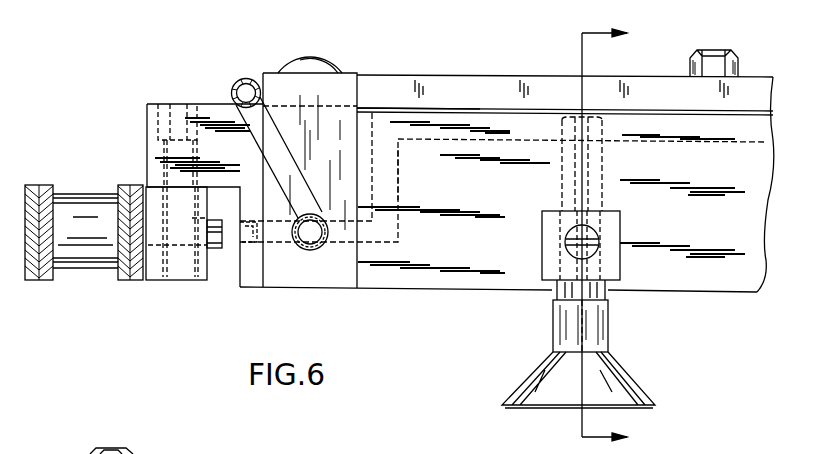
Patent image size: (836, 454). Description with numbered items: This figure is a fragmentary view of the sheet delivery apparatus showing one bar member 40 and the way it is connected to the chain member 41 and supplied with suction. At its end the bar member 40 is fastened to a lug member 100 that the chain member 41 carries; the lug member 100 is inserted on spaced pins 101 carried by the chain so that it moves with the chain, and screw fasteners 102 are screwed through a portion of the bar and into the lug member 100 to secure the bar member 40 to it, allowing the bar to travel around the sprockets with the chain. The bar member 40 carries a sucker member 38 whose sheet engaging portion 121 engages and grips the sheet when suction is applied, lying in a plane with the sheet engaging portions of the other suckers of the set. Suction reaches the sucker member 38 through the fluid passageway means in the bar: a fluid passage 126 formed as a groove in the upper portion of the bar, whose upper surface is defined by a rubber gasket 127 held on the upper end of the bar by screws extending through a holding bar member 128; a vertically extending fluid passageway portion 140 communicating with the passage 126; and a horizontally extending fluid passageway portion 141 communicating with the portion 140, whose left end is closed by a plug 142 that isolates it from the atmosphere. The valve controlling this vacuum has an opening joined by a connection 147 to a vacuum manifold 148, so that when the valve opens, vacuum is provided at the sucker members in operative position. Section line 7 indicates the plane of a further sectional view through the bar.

The section line 7- 7 is at (616, 233).
The sucker member 38 is at (603, 333).
The bar member 40 is at (457, 268).
The chain member 41 is at (33, 277).
The lug member 100 is at (152, 243).
The spaced pins 101 is at (180, 275).
The screw fasteners 102 is at (160, 125).
The sheet engaging portion 121 is at (655, 400).
The fluid passage 126 is at (448, 125).
The rubber gasket 127 is at (372, 108).
The holding bar member 128 is at (635, 86).
The fluid passageway portion 140 is at (389, 178).
The fluid passageway portion 141 is at (367, 243).
The plug 142 is at (240, 243).
The connection 147 is at (291, 226).
The vacuum manifold 148 is at (231, 90).